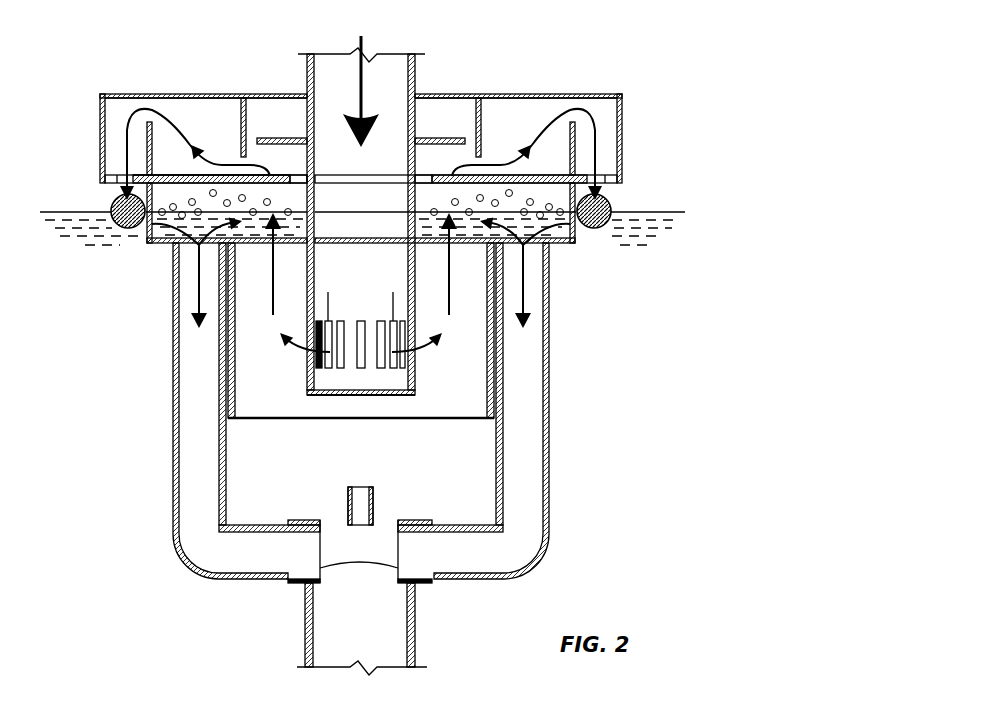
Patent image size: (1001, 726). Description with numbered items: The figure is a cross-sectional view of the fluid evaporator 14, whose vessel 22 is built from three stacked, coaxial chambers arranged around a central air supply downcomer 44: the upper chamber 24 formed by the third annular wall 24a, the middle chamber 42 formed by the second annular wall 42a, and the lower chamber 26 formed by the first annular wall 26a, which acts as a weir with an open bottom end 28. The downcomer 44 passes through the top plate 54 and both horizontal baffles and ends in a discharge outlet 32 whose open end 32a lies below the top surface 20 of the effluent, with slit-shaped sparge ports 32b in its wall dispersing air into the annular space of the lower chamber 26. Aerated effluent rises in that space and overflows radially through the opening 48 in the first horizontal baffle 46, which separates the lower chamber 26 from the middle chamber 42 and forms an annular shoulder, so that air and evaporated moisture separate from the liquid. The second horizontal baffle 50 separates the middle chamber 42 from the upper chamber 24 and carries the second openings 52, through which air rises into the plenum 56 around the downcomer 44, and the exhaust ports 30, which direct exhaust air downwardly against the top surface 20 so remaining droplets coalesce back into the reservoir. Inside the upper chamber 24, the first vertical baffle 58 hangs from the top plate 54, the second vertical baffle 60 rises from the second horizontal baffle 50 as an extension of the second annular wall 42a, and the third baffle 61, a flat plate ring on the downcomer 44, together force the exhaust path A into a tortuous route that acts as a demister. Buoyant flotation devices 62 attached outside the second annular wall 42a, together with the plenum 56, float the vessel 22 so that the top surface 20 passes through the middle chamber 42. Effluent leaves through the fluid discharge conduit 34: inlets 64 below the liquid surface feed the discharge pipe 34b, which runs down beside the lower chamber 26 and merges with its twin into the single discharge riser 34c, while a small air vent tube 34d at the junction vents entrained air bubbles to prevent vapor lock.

The fluid evaporator 14 is at (562, 55).
The top surface of the effluent 20 is at (640, 212).
The vessel 22 is at (622, 91).
The upper chamber 24 is at (197, 128).
The third annular wall 24a is at (100, 100).
The lower chamber 26 is at (263, 363).
The first annular wall 26a is at (245, 418).
The open bottom end 28 is at (285, 420).
The exhaust port 30 is at (113, 183).
The discharge outlet 32 is at (318, 395).
The open end 32a is at (362, 397).
The sparge ports 32b is at (410, 358).
The fluid discharge conduit 34 is at (392, 670).
The discharge pipe 34b is at (549, 545).
The discharge riser 34c is at (315, 647).
The air vent tube 34d is at (374, 500).
The middle chamber 42 is at (173, 240).
The second annular wall 42a is at (167, 242).
The air supply downcomer 44 is at (305, 68).
The first horizontal baffle 46 is at (222, 276).
The opening 48 is at (268, 246).
The second horizontal baffle 50 is at (177, 175).
The second opening 52 is at (270, 193).
The top plate 54 is at (180, 95).
The plenum 56 is at (449, 133).
The first vertical baffle 58 is at (238, 125).
The second vertical baffle 60 is at (147, 133).
The third baffle 61 is at (452, 192).
The buoyant flotation device 62 is at (125, 224).
The inlet 64 is at (197, 246).
The exhaust path A is at (505, 163).